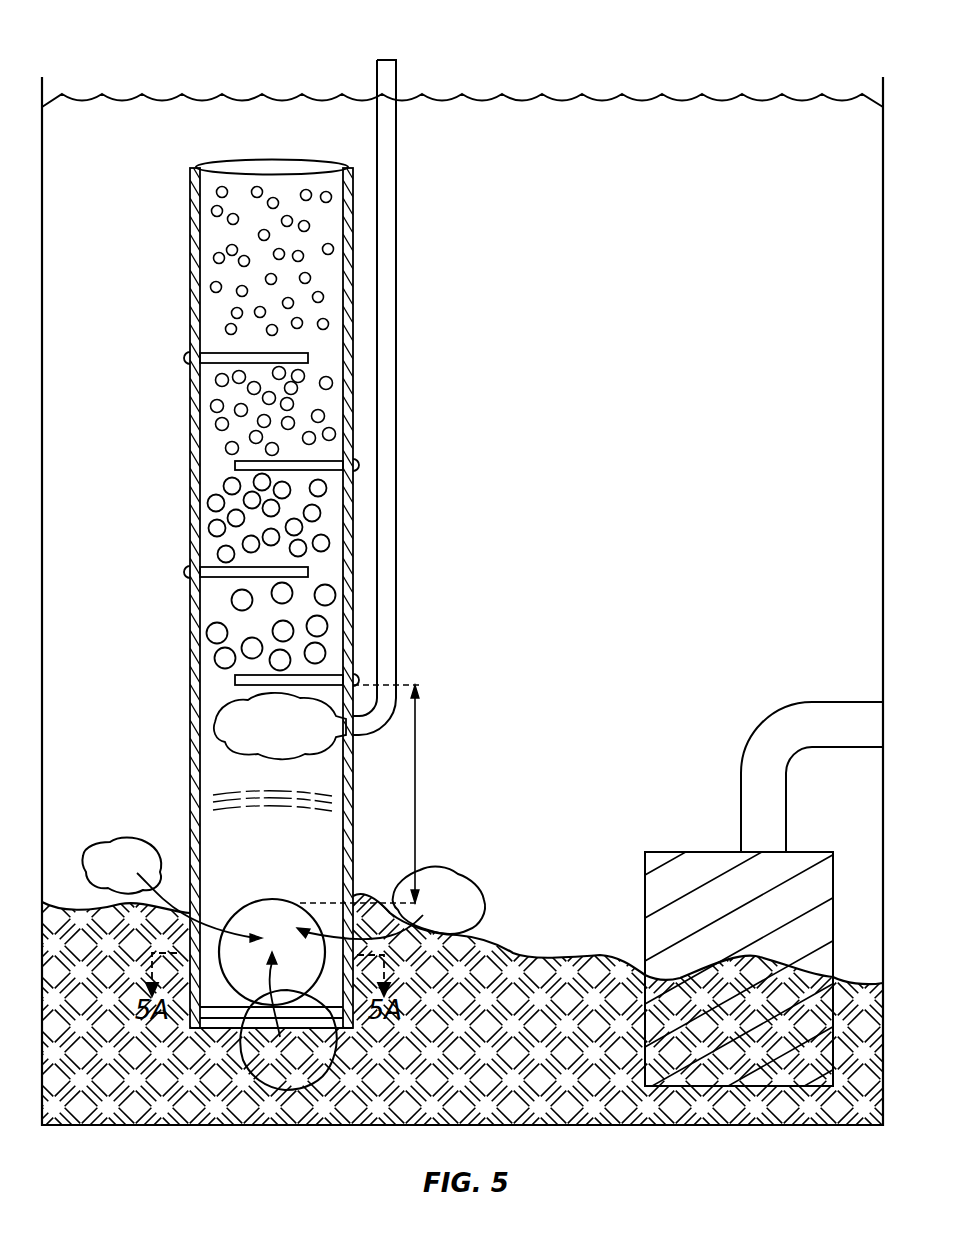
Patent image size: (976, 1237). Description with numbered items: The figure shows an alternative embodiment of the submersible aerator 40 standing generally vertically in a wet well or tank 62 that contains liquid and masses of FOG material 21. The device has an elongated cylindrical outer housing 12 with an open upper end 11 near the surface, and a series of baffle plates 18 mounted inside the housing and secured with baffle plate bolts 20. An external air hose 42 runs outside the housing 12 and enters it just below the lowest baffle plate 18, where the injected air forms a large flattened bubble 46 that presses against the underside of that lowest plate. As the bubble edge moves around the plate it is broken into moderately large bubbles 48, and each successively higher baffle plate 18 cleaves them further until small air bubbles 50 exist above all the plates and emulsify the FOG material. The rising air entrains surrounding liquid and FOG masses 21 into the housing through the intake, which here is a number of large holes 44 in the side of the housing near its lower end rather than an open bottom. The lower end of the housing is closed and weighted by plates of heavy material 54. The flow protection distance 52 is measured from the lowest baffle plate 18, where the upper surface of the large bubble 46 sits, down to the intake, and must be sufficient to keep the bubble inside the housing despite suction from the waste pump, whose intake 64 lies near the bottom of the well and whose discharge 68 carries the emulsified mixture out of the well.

The open upper end 11 is at (306, 172).
The elongated cylindrical outer housing 12 is at (190, 298).
The baffle plates 18 is at (232, 581).
The baffle plate bolts 20 is at (186, 572).
The masses of FOG material 21 is at (118, 840).
The submersible aerator 40 is at (278, 561).
The external air hose 42 is at (396, 632).
The large holes 44 is at (247, 906).
The large bubble 46 is at (225, 720).
The moderately large bubbles 48 is at (335, 595).
The small air bubbles 50 is at (227, 250).
The flow protection distance 52 is at (416, 818).
The plates of heavy material 54 is at (212, 1013).
The tank 62 is at (592, 142).
The pump intake 64 is at (478, 977).
The pump discharge 68 is at (741, 803).